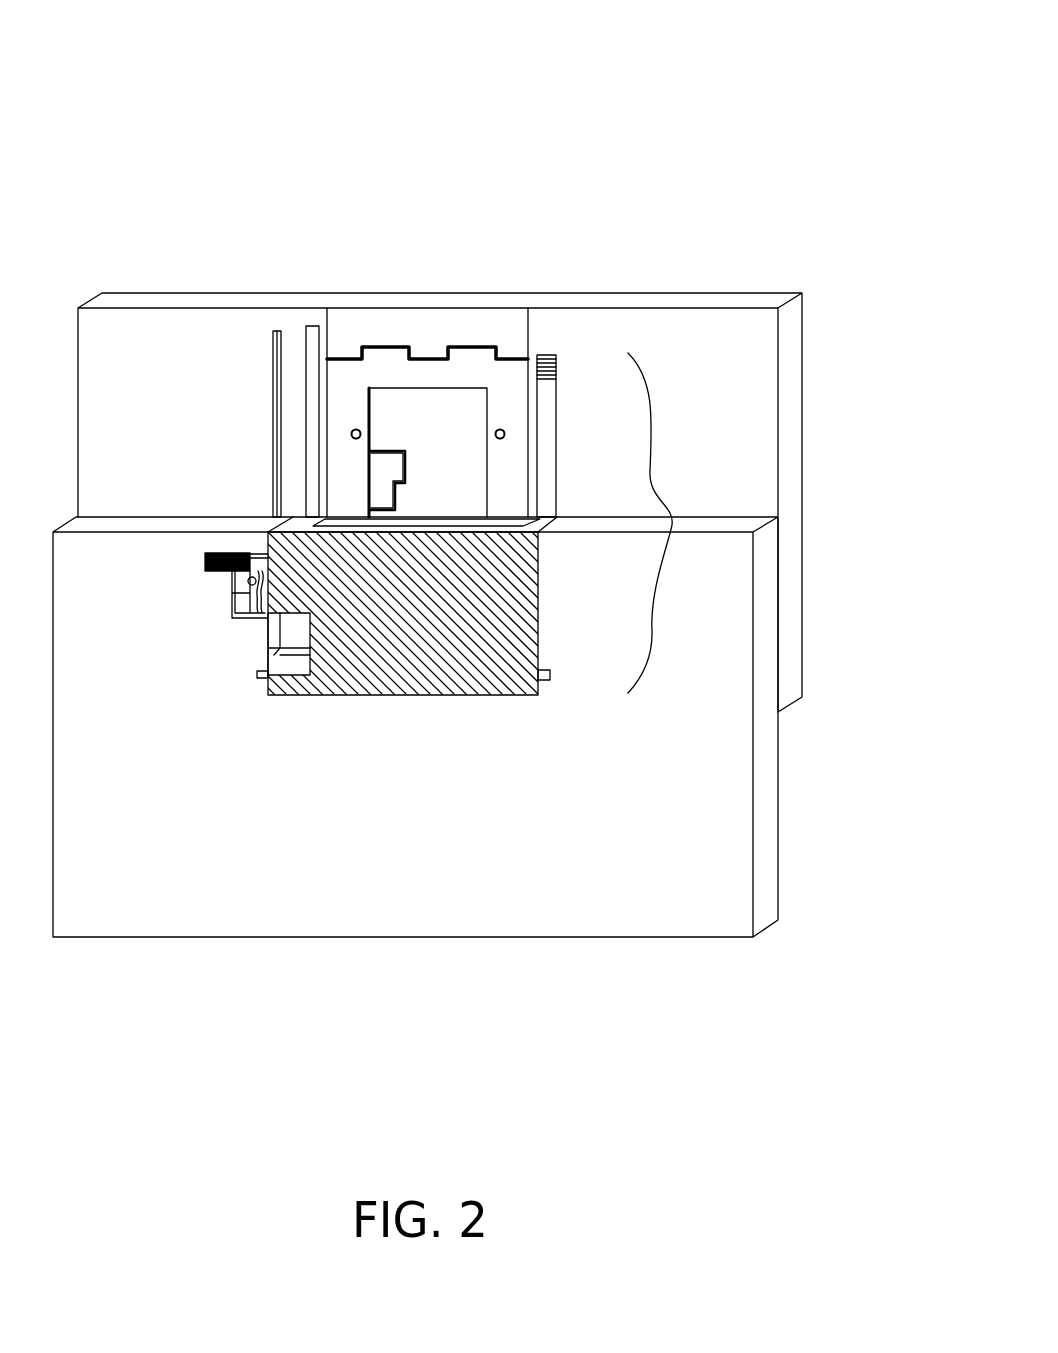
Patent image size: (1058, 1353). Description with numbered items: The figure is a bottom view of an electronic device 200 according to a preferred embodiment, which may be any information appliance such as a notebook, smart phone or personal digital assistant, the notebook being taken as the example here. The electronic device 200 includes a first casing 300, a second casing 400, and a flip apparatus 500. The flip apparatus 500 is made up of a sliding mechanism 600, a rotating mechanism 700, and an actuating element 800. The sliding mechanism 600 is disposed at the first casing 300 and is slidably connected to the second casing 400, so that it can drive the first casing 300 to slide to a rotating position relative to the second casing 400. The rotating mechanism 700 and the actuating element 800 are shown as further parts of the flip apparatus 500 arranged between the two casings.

The electronic device 200 is at (458, 547).
The first casing 300 is at (730, 297).
The second casing 400 is at (665, 893).
The flip apparatus 500 is at (685, 523).
The sliding mechanism 600 is at (483, 362).
The rotating mechanism 700 is at (557, 517).
The actuating element 800 is at (190, 553).